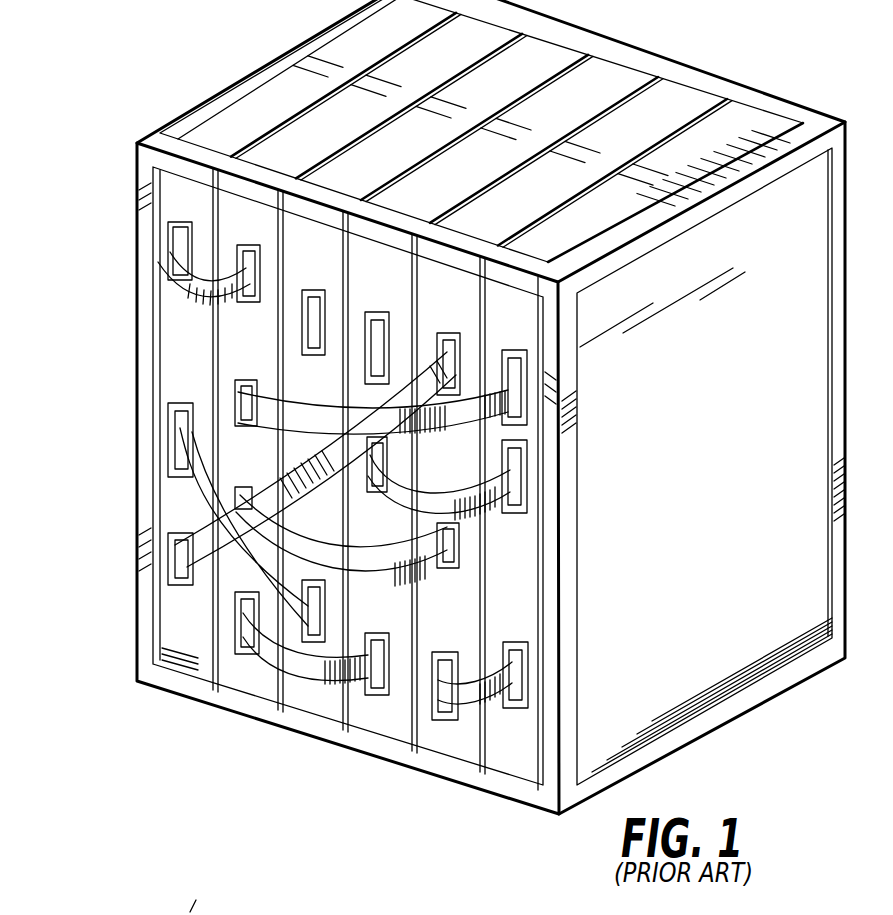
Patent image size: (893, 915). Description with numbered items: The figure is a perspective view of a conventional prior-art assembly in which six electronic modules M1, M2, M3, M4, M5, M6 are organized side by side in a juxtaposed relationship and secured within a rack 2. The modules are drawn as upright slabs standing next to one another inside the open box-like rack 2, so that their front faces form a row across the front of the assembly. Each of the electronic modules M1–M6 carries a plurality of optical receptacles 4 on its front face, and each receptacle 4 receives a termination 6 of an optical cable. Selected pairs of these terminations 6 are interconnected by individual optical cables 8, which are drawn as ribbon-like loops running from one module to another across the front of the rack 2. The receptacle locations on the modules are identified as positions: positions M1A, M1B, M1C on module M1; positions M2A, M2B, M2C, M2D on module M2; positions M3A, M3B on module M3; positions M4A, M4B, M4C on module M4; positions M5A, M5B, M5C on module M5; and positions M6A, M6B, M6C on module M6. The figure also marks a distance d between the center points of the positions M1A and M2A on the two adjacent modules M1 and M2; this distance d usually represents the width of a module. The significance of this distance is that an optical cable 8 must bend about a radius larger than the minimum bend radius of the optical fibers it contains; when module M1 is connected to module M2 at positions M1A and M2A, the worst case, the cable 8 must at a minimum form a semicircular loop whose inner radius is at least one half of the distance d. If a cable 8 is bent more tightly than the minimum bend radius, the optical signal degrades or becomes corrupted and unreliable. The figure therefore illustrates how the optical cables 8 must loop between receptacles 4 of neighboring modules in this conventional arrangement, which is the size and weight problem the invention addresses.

The rack 2 is at (144, 194).
The distance d is at (246, 237).
The optical receptacle 4 is at (196, 248).
The termination 6 is at (172, 236).
The optical cable 8 is at (188, 292).
The electronic module M1 is at (190, 668).
The electronic module M2 is at (252, 684).
The electronic module M3 is at (318, 704).
The electronic module M4 is at (383, 722).
The electronic module M5 is at (452, 745).
The electronic module M6 is at (515, 762).
The position M1A is at (173, 250).
The position M1B is at (170, 440).
The position M1C is at (170, 550).
The position M2A is at (249, 243).
The position M2B is at (237, 374).
The position M2C is at (236, 496).
The position M2D is at (236, 630).
The position M3A is at (320, 281).
The position M3B is at (310, 582).
The position M4A is at (370, 315).
The position M4B is at (388, 462).
The position M4C is at (376, 635).
The position M5A is at (447, 335).
The position M5B is at (458, 550).
The position M5C is at (445, 660).
The position M6A is at (510, 352).
The position M6B is at (527, 470).
The position M6C is at (528, 670).